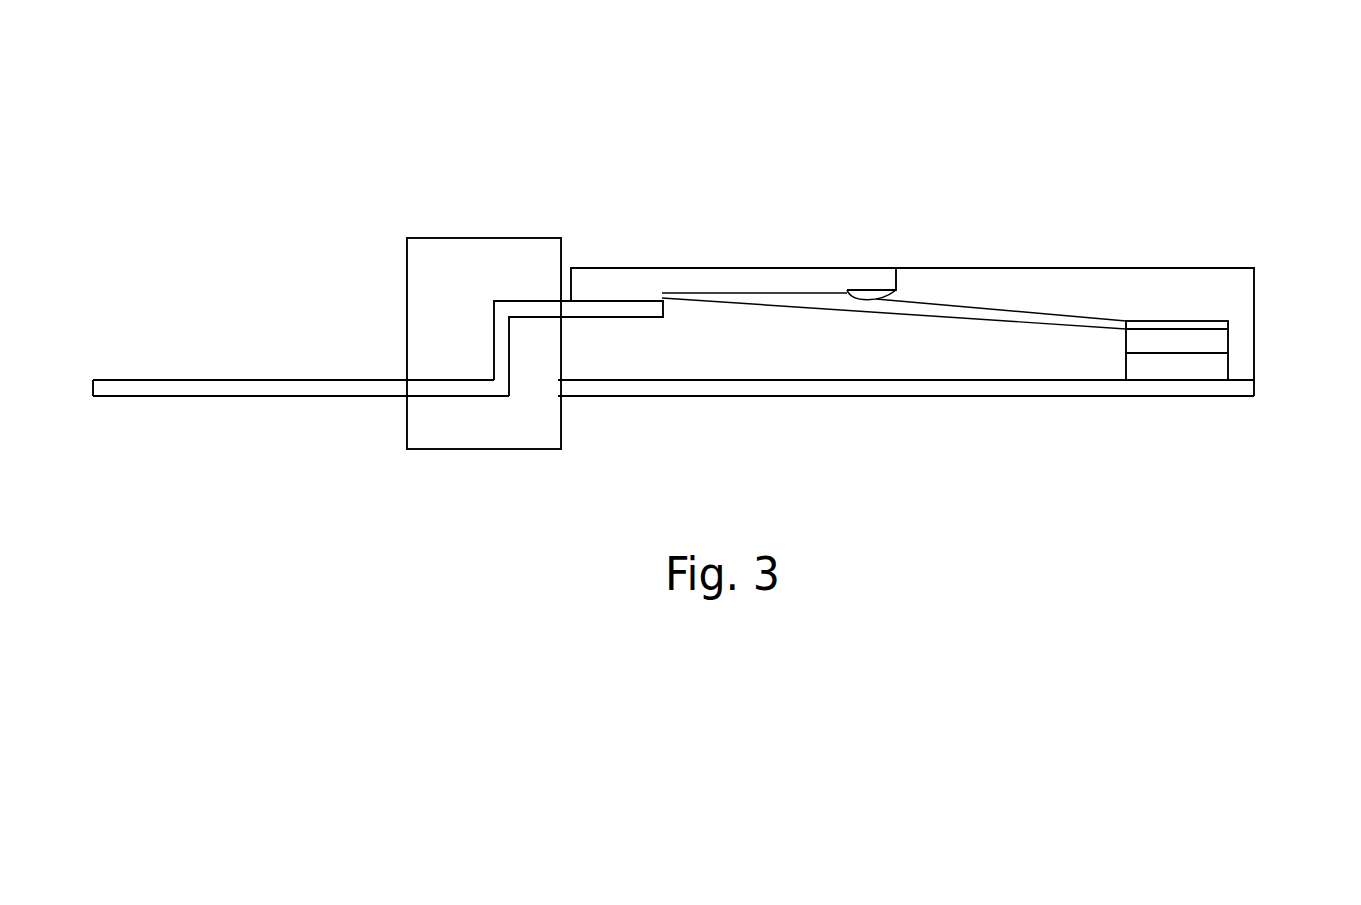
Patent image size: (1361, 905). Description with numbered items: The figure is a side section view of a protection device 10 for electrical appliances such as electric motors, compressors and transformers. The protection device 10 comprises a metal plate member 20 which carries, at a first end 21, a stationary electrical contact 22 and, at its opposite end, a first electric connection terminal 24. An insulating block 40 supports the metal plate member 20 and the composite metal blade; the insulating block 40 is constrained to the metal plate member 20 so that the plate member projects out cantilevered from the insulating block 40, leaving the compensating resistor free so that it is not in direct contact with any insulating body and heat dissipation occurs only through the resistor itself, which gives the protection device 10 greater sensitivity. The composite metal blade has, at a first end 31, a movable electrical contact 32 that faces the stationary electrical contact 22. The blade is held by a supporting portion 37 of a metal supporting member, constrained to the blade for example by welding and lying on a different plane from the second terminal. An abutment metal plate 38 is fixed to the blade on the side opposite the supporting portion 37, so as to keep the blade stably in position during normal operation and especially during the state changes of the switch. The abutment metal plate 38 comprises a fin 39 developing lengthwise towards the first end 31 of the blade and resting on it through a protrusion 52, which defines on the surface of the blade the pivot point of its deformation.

The protection device 10 is at (1223, 147).
The metal plate member 20 is at (960, 397).
The first end 21 is at (1180, 388).
The stationary electrical contact 22 is at (1217, 370).
The first electric connection terminal 24 is at (276, 393).
The first end 31 is at (1202, 318).
The movable electrical contact 32 is at (1218, 342).
The supporting portion 37 is at (628, 307).
The abutment metal plate 38 is at (587, 258).
The fin 39 is at (792, 280).
The insulating block 40 is at (464, 243).
The protrusion 52 is at (893, 291).